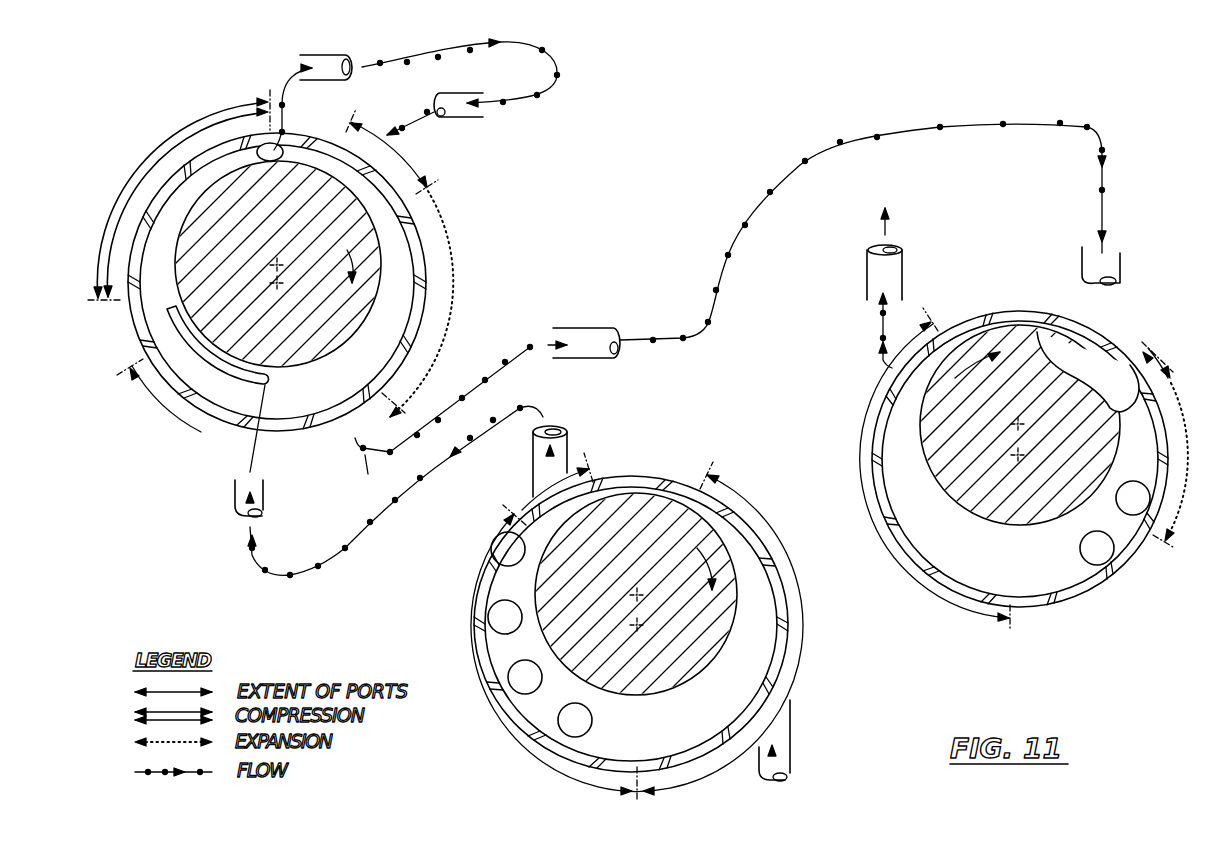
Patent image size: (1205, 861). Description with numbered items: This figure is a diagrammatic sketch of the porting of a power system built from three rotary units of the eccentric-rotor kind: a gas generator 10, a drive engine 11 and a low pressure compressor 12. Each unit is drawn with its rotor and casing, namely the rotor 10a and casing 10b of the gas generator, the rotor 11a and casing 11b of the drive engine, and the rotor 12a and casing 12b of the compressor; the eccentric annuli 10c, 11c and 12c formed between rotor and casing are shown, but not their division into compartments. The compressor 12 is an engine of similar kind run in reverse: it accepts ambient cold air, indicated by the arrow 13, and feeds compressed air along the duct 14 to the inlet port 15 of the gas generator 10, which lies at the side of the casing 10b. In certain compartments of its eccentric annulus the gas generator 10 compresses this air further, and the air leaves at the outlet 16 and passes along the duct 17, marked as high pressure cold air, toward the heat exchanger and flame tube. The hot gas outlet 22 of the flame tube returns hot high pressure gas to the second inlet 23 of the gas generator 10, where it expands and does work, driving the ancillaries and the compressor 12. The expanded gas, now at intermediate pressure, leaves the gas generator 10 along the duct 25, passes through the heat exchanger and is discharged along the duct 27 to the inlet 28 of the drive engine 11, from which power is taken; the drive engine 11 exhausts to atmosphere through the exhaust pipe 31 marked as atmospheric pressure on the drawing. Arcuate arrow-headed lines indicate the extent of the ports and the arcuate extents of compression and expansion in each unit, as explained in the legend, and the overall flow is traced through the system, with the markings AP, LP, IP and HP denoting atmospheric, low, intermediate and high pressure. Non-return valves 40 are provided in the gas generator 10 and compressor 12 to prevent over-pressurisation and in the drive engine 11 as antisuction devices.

The gas generator engine 10 is at (210, 413).
The rotor of gas generator 10a is at (301, 350).
The casing of gas generator 10b is at (425, 262).
The eccentric annulus of gas generator 10c is at (400, 295).
The drive engine 11 is at (1107, 582).
The rotor of drive engine 11a is at (982, 500).
The casing of drive engine 11b is at (1120, 562).
The eccentric annulus of drive engine 11c is at (1047, 582).
The low pressure compressor 12 is at (548, 754).
The rotor of compressor 12a is at (678, 675).
The casing of compressor 12b is at (785, 645).
The eccentric annulus of compressor 12c is at (740, 677).
The ambient cold air inlet arrow 13 is at (783, 762).
The duct 14 is at (238, 494).
The inlet port 15 is at (212, 368).
The outlet 16 is at (275, 152).
The duct 17 is at (350, 55).
The hot gas outlet 22 is at (468, 115).
The second inlet 23 is at (408, 160).
The duct 25 is at (578, 333).
The duct 27 is at (1112, 258).
The inlet 28 is at (1118, 370).
The atmospheric pressure outlet pipe 31 is at (867, 275).
The non-return valves 40 is at (585, 724).